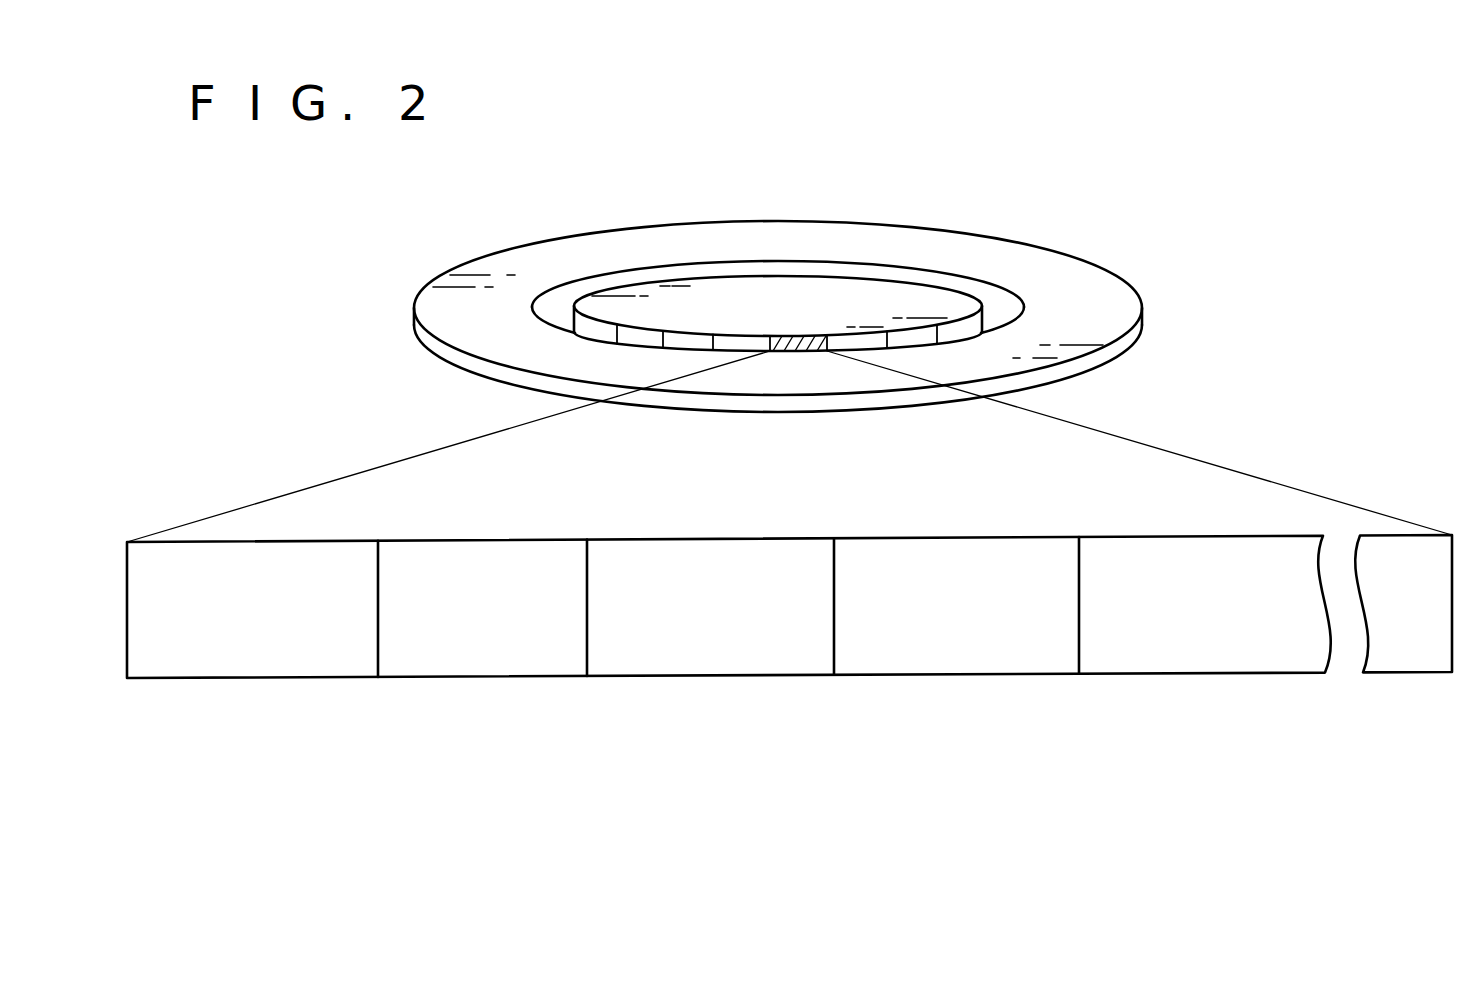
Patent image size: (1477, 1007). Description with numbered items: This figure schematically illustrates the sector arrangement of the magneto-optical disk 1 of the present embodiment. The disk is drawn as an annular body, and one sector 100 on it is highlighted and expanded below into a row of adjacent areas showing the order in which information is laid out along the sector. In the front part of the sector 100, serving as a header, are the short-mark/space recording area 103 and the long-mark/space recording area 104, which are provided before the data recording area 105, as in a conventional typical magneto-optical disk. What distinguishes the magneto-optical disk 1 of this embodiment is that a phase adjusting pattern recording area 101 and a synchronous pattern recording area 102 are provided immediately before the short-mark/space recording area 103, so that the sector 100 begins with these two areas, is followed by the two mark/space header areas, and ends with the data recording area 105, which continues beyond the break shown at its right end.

The magneto-optical disk 1 is at (548, 265).
The sector 100 is at (764, 337).
The phase adjusting pattern recording area 101 is at (273, 541).
The synchronous pattern recording area 102 is at (470, 541).
The short-mark/space recording area 103 is at (715, 539).
The long-mark/space recording area 104 is at (945, 538).
The data recording area 105 is at (1185, 536).